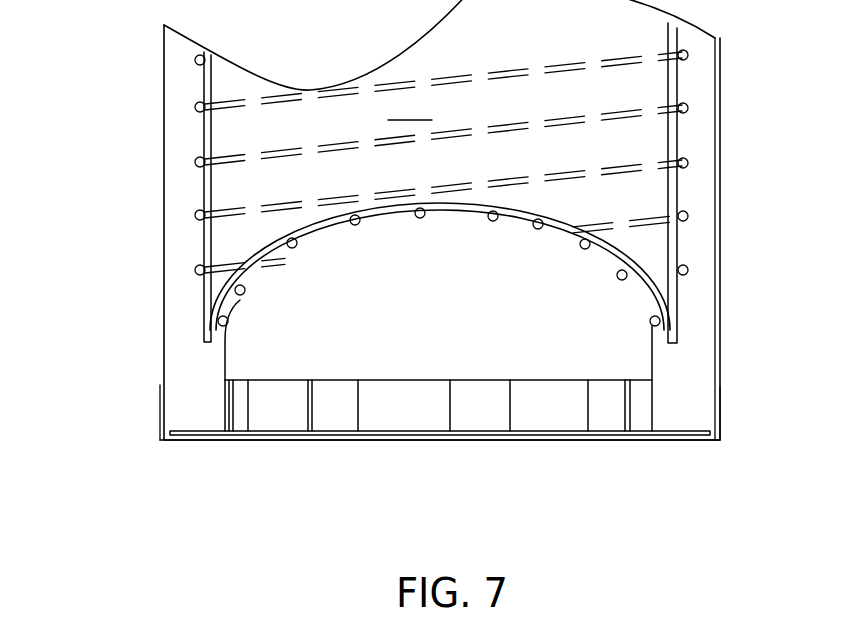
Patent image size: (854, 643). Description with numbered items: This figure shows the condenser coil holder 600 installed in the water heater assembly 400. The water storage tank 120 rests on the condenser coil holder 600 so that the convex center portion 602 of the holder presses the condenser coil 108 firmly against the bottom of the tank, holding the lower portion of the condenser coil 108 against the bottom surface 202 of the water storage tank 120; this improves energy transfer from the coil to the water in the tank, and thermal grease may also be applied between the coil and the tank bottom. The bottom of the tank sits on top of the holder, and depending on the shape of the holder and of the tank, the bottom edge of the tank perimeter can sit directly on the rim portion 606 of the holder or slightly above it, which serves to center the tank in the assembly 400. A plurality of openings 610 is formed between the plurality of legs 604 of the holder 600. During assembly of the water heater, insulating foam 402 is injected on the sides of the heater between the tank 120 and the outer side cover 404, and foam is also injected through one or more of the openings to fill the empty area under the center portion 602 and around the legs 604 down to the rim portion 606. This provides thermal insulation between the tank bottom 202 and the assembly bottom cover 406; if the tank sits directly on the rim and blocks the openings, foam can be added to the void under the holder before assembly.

The water heater assembly 400 is at (411, 220).
The water storage tank 120 is at (410, 106).
The condenser coil 108 is at (196, 161).
The outer side cover 404 is at (163, 243).
The insulating foam 402 is at (192, 303).
The bottom surface of the water storage tank 202 is at (300, 248).
The convex center portion 602 is at (453, 218).
The condenser coil holder 600 is at (531, 399).
The rim portion 606 is at (683, 430).
The assembly bottom cover 406 is at (200, 444).
The openings 610 is at (327, 419).
The legs 604 is at (547, 420).